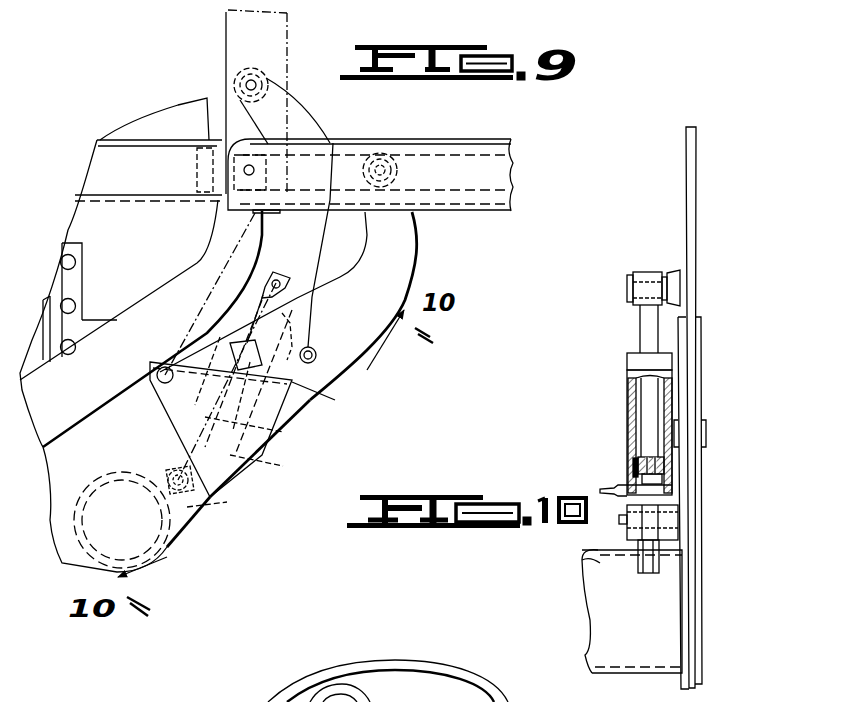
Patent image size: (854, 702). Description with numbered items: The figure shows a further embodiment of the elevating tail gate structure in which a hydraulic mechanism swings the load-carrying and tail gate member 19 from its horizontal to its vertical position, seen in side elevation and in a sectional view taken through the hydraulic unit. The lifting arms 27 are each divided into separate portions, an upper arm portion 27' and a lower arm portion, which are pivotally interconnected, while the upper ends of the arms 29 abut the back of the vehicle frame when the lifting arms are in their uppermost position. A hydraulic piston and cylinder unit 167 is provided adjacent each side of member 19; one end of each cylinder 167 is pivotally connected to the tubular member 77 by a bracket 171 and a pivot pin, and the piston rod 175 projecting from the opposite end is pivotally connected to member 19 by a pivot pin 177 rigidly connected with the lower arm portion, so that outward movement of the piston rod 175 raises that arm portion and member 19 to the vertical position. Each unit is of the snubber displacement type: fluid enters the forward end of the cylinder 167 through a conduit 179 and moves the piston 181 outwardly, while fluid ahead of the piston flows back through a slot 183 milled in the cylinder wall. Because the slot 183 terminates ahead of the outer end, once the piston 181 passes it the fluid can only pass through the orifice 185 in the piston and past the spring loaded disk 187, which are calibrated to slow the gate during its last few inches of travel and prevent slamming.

In FIG. 9, the load-carrying and tail gate member 19 is at (226, 30).
In FIG. 9, the arms 29 is at (95, 384).
In FIG. 9, the lifting arms 27 is at (274, 354).
In FIG. 10, the lifting arms 27 is at (725, 500).
In FIG. 9, the upper arm portion 27' is at (196, 528).
In FIG. 10, the upper arm portion 27' is at (716, 503).
In FIG. 9, the tubular member 77 is at (170, 532).
In FIG. 10, the tubular member 77 is at (645, 631).
In FIG. 9, the hydraulic piston and cylinder unit 167 is at (283, 431).
In FIG. 10, the hydraulic piston and cylinder unit 167 is at (627, 415).
In FIG. 9, the bracket 171 is at (223, 503).
In FIG. 10, the bracket 171 is at (652, 562).
In FIG. 9, the piston rod 175 is at (258, 330).
In FIG. 10, the piston rod 175 is at (641, 322).
In FIG. 9, the pivot pin 177 is at (312, 345).
In FIG. 10, the pivot pin 177 is at (627, 290).
In FIG. 10, the conduit 179 is at (603, 490).
In FIG. 10, the piston 181 is at (660, 467).
In FIG. 10, the slot 183 is at (637, 402).
In FIG. 10, the orifice 185 is at (635, 462).
In FIG. 10, the spring loaded disk 187 is at (660, 482).